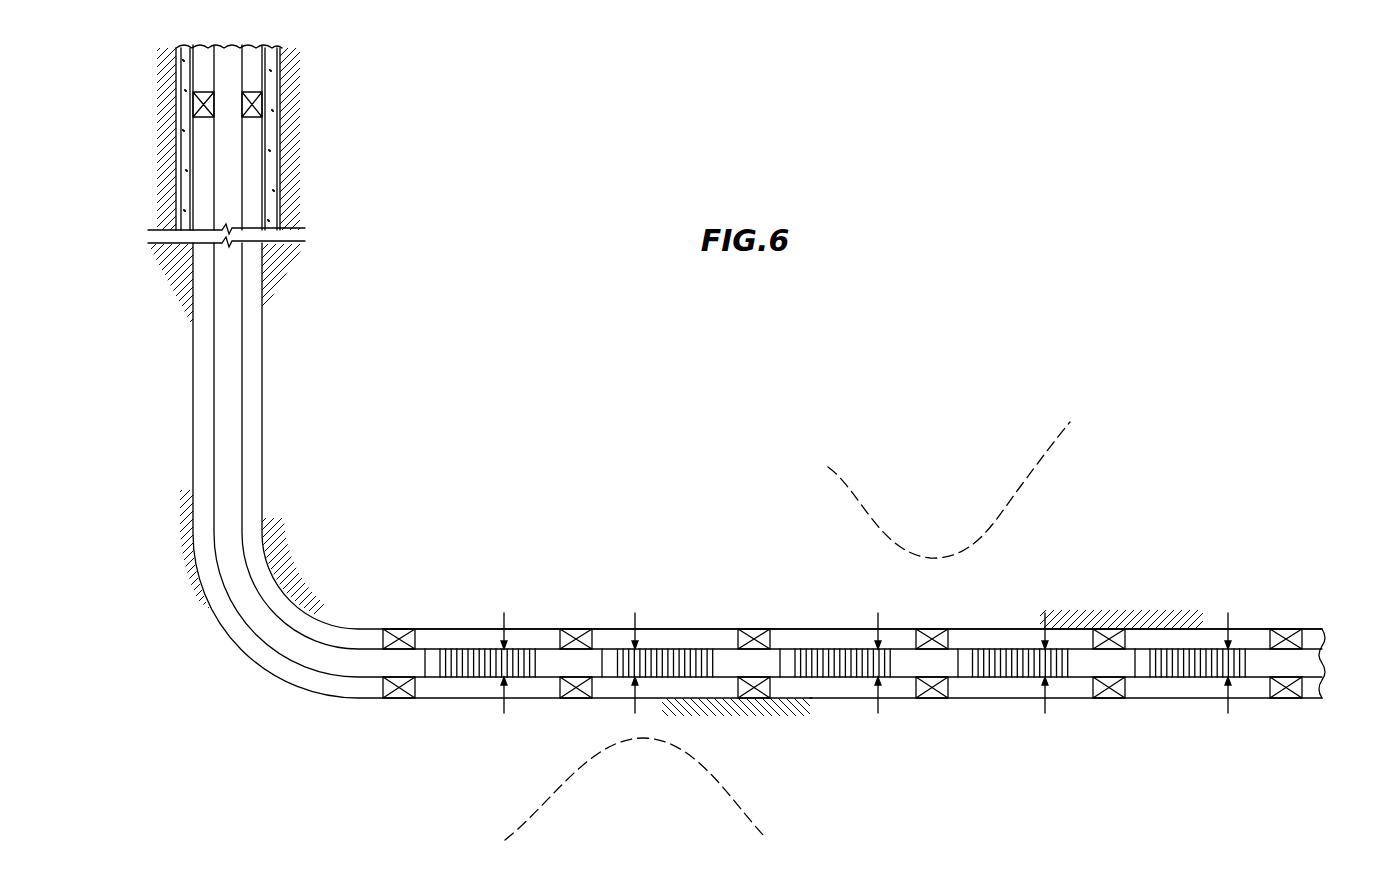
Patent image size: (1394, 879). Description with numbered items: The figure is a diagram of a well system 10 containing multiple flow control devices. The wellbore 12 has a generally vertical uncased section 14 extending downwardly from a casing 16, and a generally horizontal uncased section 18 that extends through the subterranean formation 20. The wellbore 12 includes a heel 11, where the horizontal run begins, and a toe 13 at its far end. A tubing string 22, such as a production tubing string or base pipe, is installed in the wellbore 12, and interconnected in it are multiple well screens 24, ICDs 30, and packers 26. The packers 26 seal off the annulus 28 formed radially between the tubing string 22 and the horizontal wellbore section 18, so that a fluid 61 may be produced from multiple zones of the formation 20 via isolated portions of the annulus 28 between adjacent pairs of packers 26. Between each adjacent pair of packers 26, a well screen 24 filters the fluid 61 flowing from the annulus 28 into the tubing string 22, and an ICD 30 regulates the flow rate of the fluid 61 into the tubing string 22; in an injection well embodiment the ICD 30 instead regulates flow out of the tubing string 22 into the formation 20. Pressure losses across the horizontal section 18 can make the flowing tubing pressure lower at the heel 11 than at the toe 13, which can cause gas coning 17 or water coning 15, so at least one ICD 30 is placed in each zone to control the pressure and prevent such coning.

The well system 10 is at (470, 282).
The heel 11 is at (238, 678).
The wellbore 12 is at (264, 379).
The toe 13 is at (1317, 621).
The vertical uncased section 14 is at (262, 332).
The water coning 15 is at (550, 797).
The casing 16 is at (272, 171).
The gas coning 17 is at (1018, 487).
The horizontal uncased section 18 is at (680, 636).
The subterranean formation 20 is at (730, 547).
The tubing string 22 is at (244, 403).
The well screen 24 is at (490, 647).
The packer 26 is at (401, 699).
The annulus 28 is at (834, 699).
The ICD 30 is at (433, 647).
The fluid 61 is at (504, 614).